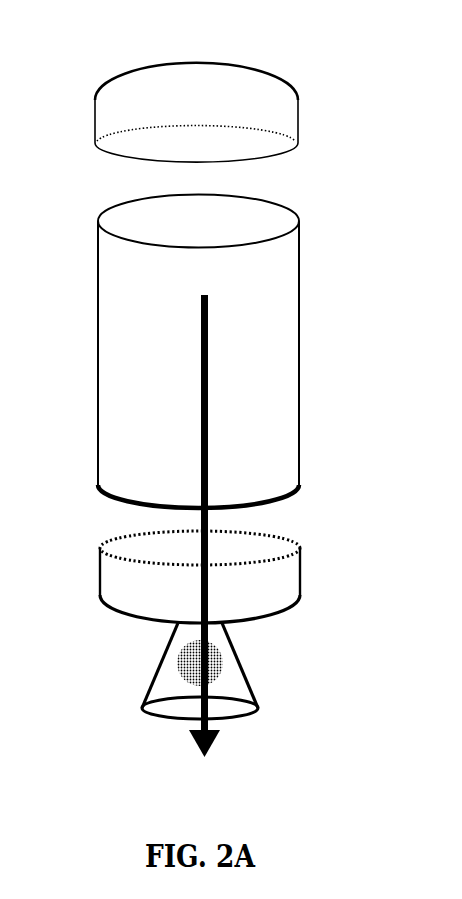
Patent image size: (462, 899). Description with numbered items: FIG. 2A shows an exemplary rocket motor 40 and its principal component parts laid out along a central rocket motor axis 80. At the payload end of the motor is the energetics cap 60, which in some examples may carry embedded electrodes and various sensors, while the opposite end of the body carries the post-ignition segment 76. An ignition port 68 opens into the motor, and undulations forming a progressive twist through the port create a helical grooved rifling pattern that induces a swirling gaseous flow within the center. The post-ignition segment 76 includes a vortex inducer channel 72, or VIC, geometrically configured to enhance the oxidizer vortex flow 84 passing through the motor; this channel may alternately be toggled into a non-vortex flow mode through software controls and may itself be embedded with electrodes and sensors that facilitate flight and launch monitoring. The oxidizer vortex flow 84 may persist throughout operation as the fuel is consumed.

The rocket motor 40 is at (321, 67).
The energetics cap 60 is at (173, 88).
The ignition port 68 is at (285, 316).
The vortex inducer channel 72 is at (272, 590).
The post-ignition segment 76 is at (134, 674).
The central rocket motor axis 80 is at (201, 320).
The oxidizer vortex flow 84 is at (215, 668).